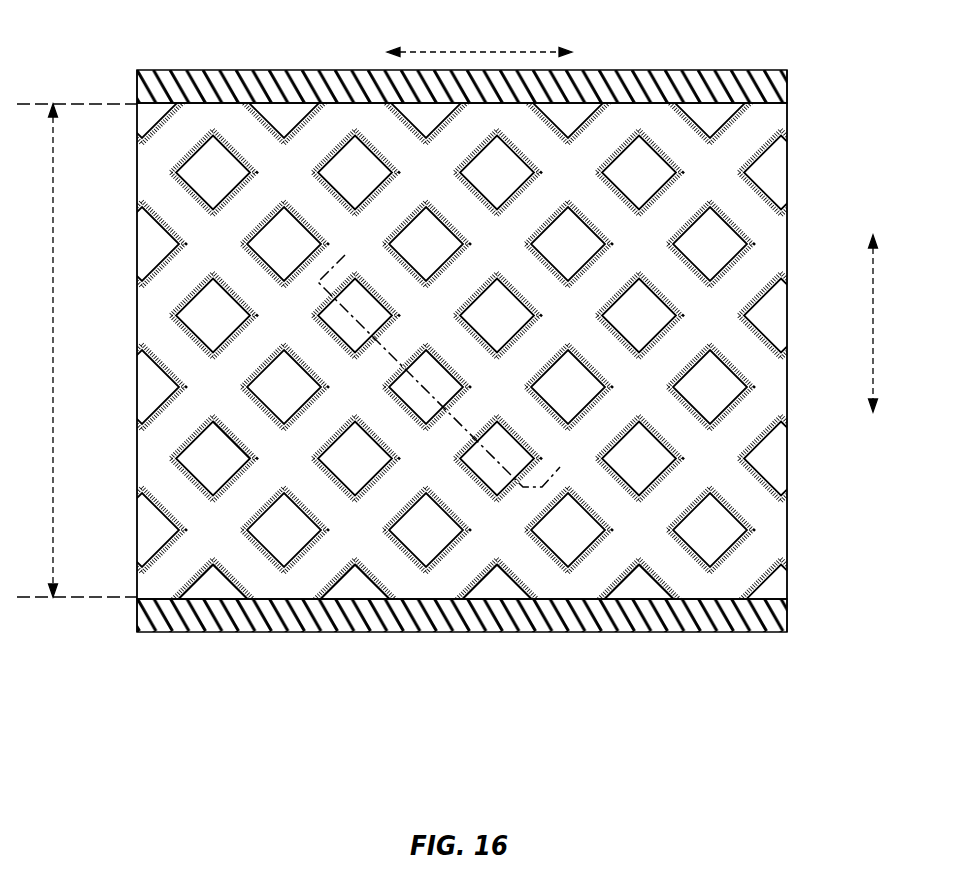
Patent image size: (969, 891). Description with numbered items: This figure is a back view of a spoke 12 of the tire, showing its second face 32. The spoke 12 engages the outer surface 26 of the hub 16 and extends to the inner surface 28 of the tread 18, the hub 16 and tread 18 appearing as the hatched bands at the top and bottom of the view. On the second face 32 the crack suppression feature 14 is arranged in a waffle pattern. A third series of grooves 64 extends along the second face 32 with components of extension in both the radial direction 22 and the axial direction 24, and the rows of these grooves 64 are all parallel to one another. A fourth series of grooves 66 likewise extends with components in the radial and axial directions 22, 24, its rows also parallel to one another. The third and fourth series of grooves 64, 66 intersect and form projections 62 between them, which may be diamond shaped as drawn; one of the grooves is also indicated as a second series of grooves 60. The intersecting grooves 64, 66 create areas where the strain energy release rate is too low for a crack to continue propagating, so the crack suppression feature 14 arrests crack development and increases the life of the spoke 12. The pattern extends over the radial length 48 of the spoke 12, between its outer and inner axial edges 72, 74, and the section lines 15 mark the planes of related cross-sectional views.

The spoke 12 is at (788, 368).
The crack suppression feature 14 is at (782, 310).
The section line 15 is at (453, 359).
The hub 16 is at (760, 80).
The tread 18 is at (753, 627).
The radial direction 22 is at (873, 322).
The axial direction 24 is at (477, 52).
The outer surface of the hub 26 is at (782, 113).
The inner surface of the tread 28 is at (770, 587).
The second face 32 is at (778, 171).
The radial length 48 is at (53, 215).
The second series of grooves 60 is at (242, 565).
The projections 62 is at (210, 325).
The third series of grooves 64 is at (170, 583).
The fourth series of grooves 66 is at (257, 428).
The outer axial edge 72 is at (787, 513).
The inner axial edge 74 is at (137, 452).